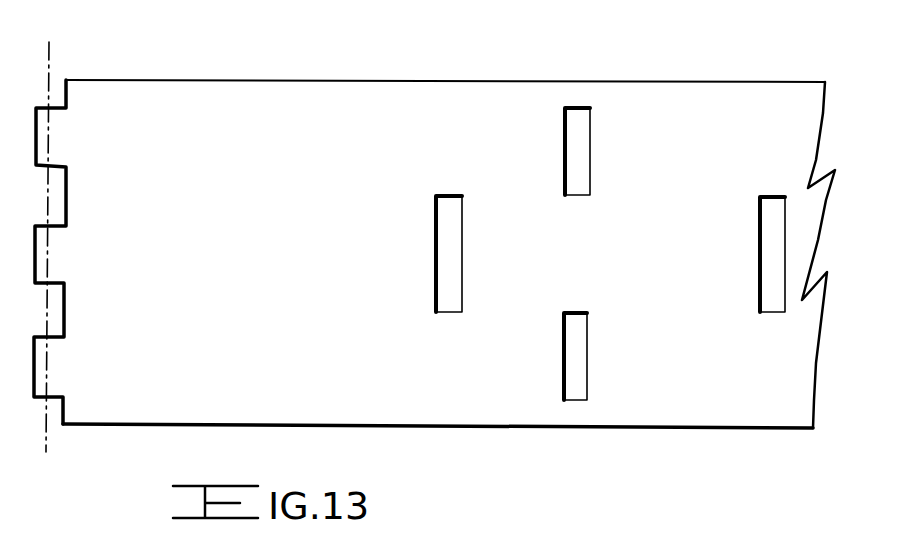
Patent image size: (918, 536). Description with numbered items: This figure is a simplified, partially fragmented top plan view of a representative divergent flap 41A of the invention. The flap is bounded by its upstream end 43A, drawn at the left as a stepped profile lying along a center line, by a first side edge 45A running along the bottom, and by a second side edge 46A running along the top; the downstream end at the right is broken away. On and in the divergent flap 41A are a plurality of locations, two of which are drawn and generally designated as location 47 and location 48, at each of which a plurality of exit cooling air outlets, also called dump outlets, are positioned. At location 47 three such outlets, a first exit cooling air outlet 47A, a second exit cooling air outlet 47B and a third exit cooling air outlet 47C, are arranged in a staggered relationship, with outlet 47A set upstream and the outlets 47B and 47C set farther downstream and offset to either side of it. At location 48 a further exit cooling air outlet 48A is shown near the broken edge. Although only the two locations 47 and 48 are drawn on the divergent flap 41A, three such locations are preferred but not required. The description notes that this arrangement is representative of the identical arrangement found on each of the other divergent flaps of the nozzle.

The divergent flap 41A is at (434, 256).
The upstream end 43A is at (50, 122).
The first side edge 45A is at (523, 428).
The second side edge 46A is at (250, 81).
The location 47 is at (596, 262).
The exit cooling air outlet 47A is at (443, 278).
The exit cooling air outlet 47B is at (582, 161).
The exit cooling air outlet 47C is at (585, 352).
The location 48 is at (784, 175).
The exit cooling air outlet 48A is at (770, 263).